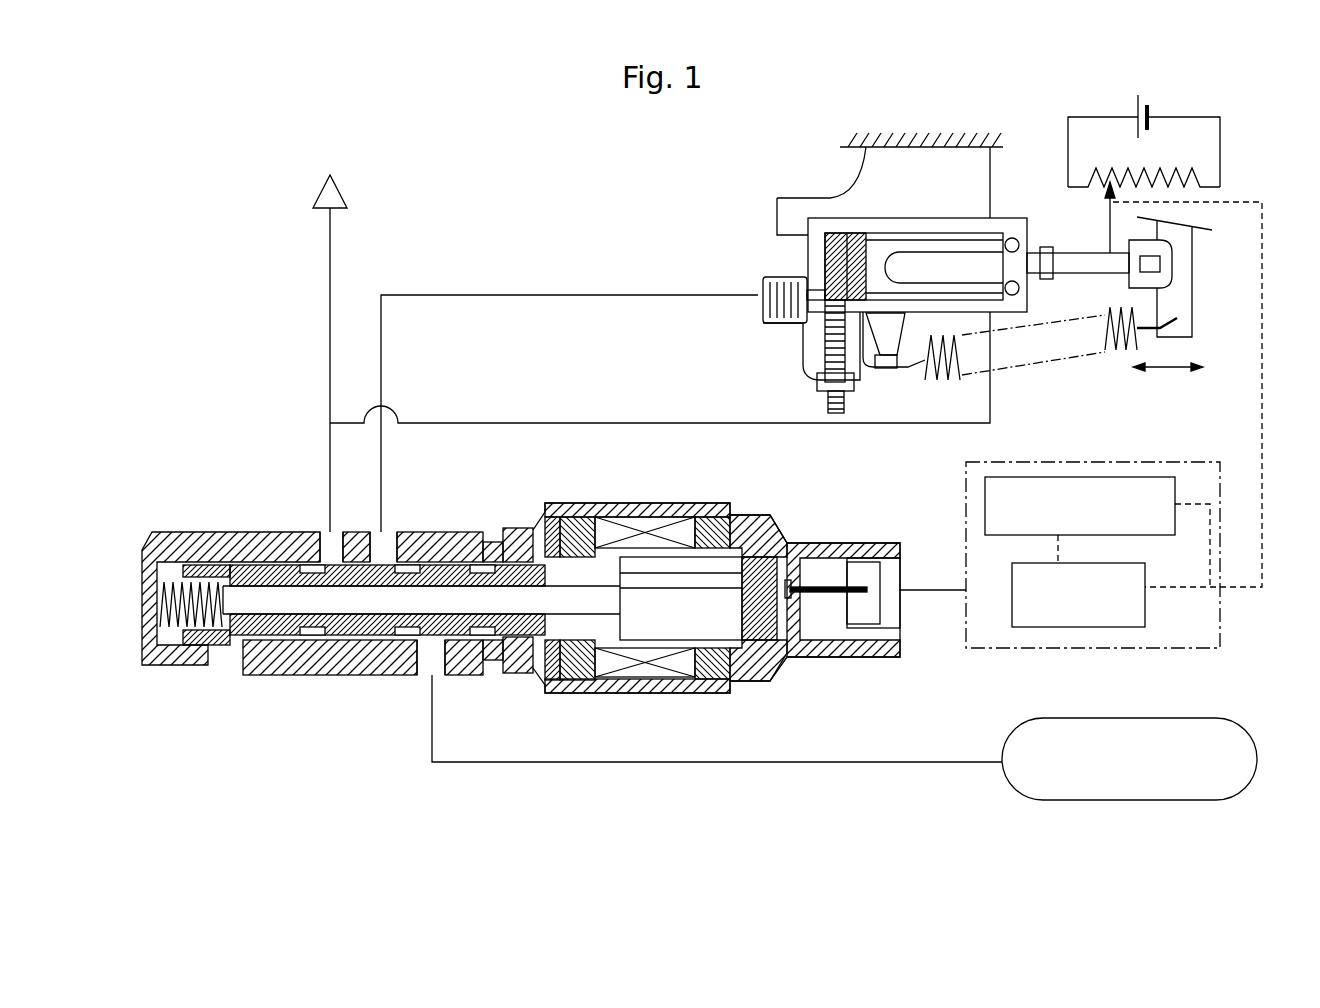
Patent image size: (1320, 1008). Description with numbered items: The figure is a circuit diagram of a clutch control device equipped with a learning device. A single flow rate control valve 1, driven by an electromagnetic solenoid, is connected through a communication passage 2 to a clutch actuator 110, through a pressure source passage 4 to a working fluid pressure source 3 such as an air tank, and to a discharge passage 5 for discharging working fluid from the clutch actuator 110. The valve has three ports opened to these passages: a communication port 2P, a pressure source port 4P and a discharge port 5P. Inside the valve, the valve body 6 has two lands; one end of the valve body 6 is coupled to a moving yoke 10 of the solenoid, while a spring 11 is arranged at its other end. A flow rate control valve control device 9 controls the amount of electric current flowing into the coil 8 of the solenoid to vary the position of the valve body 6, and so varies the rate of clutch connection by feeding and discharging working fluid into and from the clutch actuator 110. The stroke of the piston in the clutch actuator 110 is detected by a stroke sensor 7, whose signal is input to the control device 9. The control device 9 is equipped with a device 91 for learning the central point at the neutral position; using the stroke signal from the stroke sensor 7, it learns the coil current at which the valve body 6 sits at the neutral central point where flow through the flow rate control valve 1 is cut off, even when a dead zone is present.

The flow rate control valve 1 is at (290, 680).
The communication passage 2 is at (606, 295).
The communication port 2P is at (388, 530).
The working fluid pressure source 3 is at (1176, 718).
The pressure source passage 4 is at (873, 764).
The pressure source port 4P is at (420, 678).
The discharge passage 5 is at (330, 237).
The discharge port 5P is at (325, 530).
The valve body 6 is at (440, 562).
The stroke sensor 7 is at (1096, 196).
The coil 8 is at (650, 530).
The flow rate control valve control device 9 is at (1040, 462).
The moving yoke 10 is at (645, 642).
The spring 11 is at (185, 635).
The device for learning the central point at the neutral position 91 is at (1127, 477).
The clutch actuator 110 is at (902, 218).